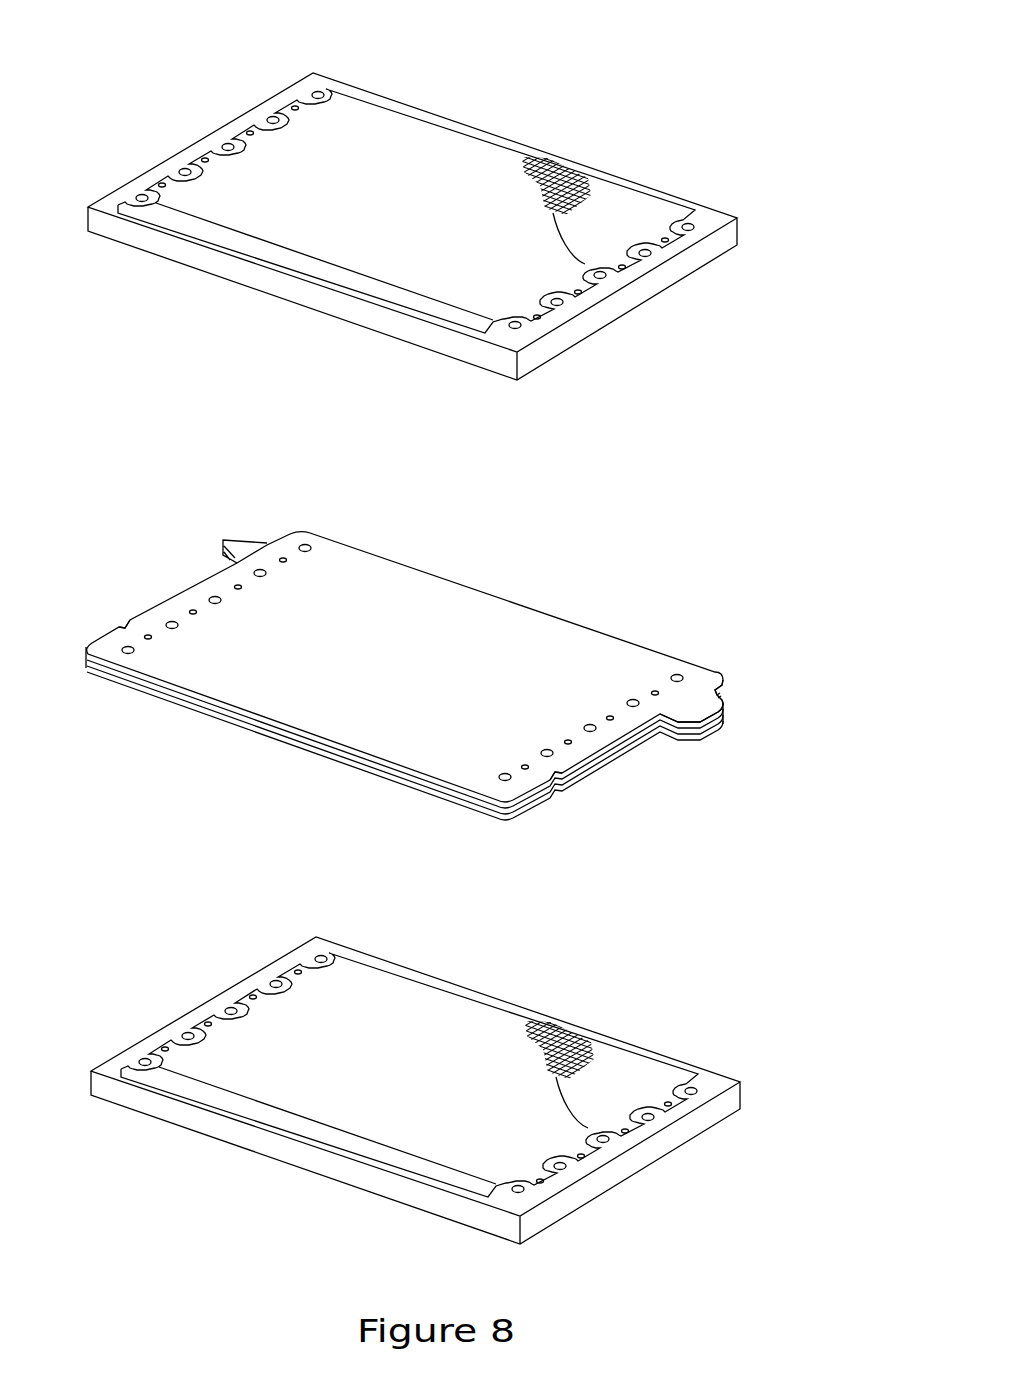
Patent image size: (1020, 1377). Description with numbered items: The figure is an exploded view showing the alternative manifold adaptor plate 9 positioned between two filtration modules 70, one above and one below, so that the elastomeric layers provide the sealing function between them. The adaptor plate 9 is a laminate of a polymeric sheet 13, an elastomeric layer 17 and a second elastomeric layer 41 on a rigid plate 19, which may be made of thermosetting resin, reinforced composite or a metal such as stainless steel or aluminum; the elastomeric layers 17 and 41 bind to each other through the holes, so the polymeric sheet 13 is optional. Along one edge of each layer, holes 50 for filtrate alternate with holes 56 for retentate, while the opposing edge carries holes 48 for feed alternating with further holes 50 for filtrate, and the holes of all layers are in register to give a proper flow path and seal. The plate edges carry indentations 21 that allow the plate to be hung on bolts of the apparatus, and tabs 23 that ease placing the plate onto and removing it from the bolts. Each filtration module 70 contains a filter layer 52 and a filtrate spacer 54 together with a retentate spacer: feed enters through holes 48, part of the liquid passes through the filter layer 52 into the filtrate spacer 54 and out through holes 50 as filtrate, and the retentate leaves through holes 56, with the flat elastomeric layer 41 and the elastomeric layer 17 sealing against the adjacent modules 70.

The manifold adaptor plate 9 is at (584, 574).
The polymeric sheet 13 is at (85, 663).
The elastomeric layer 17 is at (308, 752).
The rigid plate 19 is at (512, 813).
The indentations 21 is at (131, 622).
The tabs 23 is at (223, 541).
The elastomeric layer 41 is at (417, 608).
The holes for feed 48 is at (560, 306).
The holes for filtrate 50 is at (296, 110).
The filter layer 52 is at (408, 643).
The filtrate spacer 54 is at (553, 158).
The holes for retentate 56 is at (318, 90).
The filtration module 70 is at (740, 220).